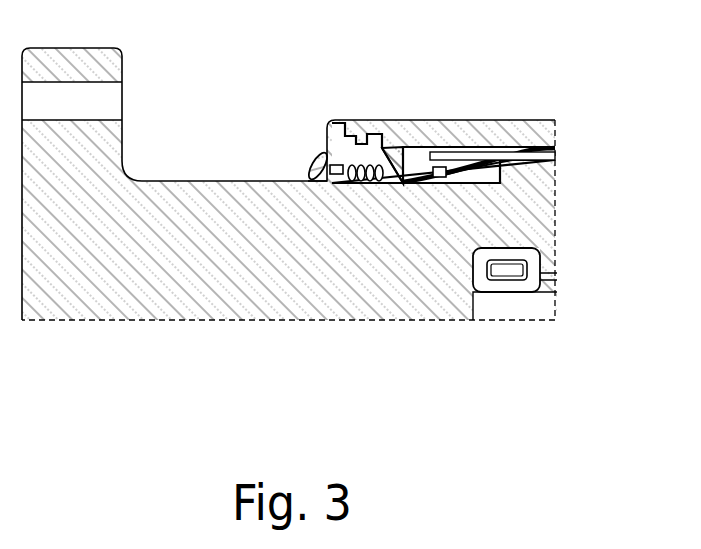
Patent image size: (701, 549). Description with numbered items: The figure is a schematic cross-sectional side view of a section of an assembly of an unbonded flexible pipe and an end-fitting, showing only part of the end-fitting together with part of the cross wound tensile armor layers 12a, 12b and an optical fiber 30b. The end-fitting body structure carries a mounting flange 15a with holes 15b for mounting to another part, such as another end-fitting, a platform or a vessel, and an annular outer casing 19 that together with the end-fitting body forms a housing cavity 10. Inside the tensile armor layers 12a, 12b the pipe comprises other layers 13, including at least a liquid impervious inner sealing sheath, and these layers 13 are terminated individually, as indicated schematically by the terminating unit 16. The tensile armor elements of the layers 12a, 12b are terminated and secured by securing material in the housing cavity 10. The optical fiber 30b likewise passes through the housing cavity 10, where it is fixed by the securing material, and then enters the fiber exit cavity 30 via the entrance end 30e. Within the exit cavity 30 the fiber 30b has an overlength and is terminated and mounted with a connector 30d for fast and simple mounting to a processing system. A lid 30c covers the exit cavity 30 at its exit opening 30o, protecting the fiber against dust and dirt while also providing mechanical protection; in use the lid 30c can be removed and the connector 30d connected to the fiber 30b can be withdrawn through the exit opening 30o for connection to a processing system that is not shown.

The housing cavity 10 is at (413, 160).
The cross wound tensile armor layer 12a is at (483, 147).
The cross wound tensile armor layer 12b is at (472, 155).
The other layers 13 is at (557, 285).
The mounting flange 15a is at (120, 173).
The holes 15b is at (110, 100).
The terminating unit 16 is at (515, 288).
The annular outer casing 19 is at (396, 132).
The fiber exit cavity 30 is at (343, 151).
The optical fiber 30b is at (362, 170).
The lid 30c is at (327, 158).
The connector 30d is at (313, 150).
The entrance end 30e is at (405, 188).
The exit opening 30o is at (321, 183).